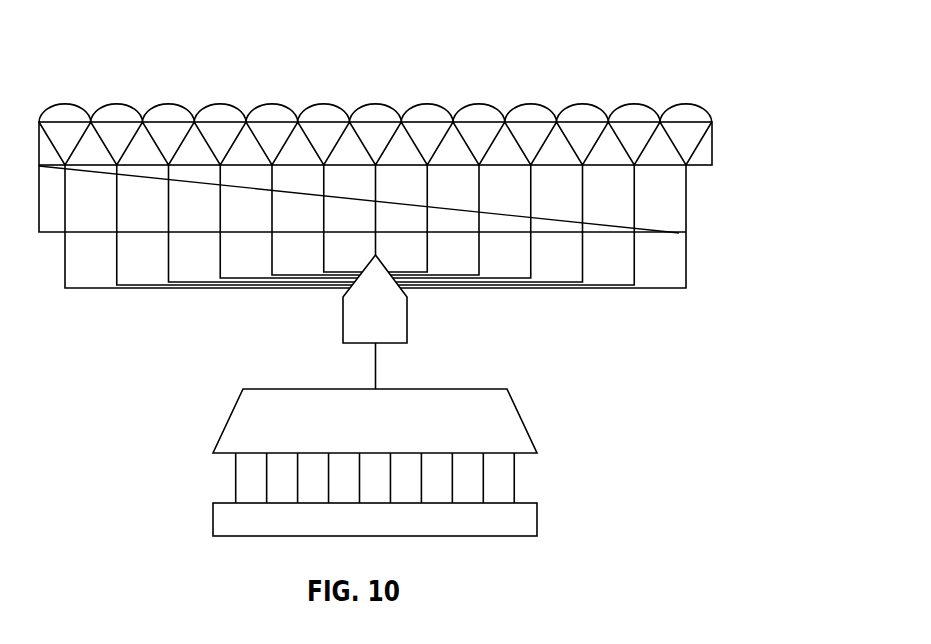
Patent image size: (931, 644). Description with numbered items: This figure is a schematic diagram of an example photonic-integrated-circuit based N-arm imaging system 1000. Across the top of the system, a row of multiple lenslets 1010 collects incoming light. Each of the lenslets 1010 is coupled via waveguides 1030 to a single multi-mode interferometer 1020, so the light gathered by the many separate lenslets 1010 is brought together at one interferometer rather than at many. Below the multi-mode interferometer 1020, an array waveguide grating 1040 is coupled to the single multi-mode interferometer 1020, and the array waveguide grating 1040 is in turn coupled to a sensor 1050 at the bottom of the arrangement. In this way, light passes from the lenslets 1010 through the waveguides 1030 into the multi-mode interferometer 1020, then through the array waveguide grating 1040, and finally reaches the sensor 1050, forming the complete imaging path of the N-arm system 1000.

The PIC based N-arm imaging system 1000 is at (604, 56).
The lenslets 1010 is at (697, 112).
The multi-mode interferometer 1020 is at (407, 320).
The waveguides 1030 is at (686, 245).
The array waveguide grating 1040 is at (520, 418).
The sensor 1050 is at (537, 518).